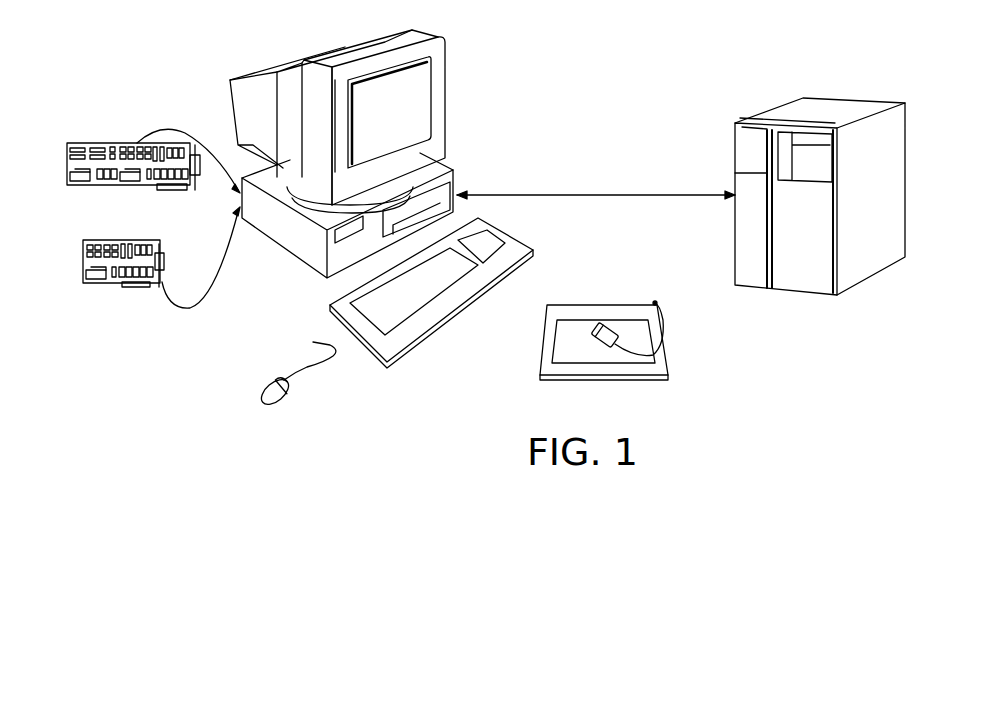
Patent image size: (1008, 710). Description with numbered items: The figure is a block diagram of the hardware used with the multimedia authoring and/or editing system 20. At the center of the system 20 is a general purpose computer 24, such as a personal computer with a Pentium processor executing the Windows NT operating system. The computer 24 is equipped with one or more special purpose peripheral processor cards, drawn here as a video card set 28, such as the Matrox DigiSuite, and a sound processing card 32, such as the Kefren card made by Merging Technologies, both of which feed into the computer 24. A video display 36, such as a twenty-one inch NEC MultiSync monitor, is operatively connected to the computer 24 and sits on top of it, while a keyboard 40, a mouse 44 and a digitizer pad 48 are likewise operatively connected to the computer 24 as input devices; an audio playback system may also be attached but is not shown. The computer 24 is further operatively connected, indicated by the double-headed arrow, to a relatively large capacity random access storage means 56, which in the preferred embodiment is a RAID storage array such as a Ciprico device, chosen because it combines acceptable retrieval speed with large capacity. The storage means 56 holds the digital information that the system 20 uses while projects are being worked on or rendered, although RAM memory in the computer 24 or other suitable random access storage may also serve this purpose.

The multimedia authoring and/or editing system 20 is at (603, 69).
The general purpose computer 24 is at (457, 190).
The video card set 28 is at (118, 143).
The sound processing card 32 is at (83, 258).
The video display 36 is at (446, 92).
The keyboard 40 is at (420, 340).
The mouse 44 is at (290, 398).
The digitizer pad 48 is at (668, 357).
The random access storage means 56 is at (849, 108).